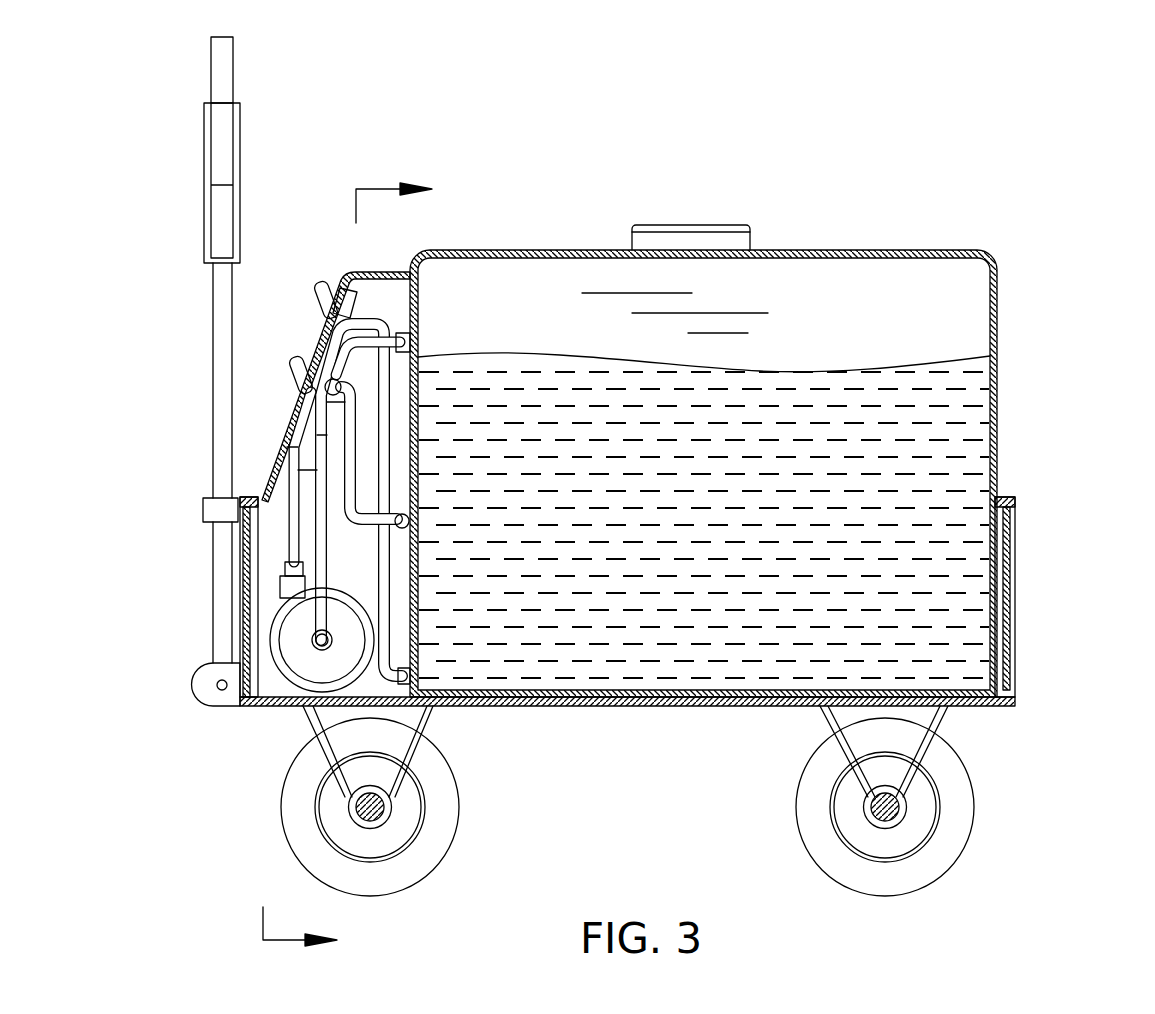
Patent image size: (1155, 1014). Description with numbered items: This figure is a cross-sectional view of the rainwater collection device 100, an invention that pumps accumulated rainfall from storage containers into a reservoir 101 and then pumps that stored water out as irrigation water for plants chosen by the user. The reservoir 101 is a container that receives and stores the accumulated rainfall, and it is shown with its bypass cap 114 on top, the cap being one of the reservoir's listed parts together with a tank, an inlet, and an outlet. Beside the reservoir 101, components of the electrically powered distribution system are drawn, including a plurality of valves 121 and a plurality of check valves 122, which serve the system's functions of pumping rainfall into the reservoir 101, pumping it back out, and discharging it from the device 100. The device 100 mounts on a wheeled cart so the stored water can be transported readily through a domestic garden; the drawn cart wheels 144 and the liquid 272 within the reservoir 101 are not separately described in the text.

The rainwater collection device 100 is at (1040, 185).
The reservoir 101 is at (997, 285).
The bypass cap 114 is at (702, 225).
The plurality of valves 121 is at (355, 338).
The plurality of check valves 122 is at (418, 517).
The wheels 144 is at (795, 800).
The liquid 272 is at (930, 420).